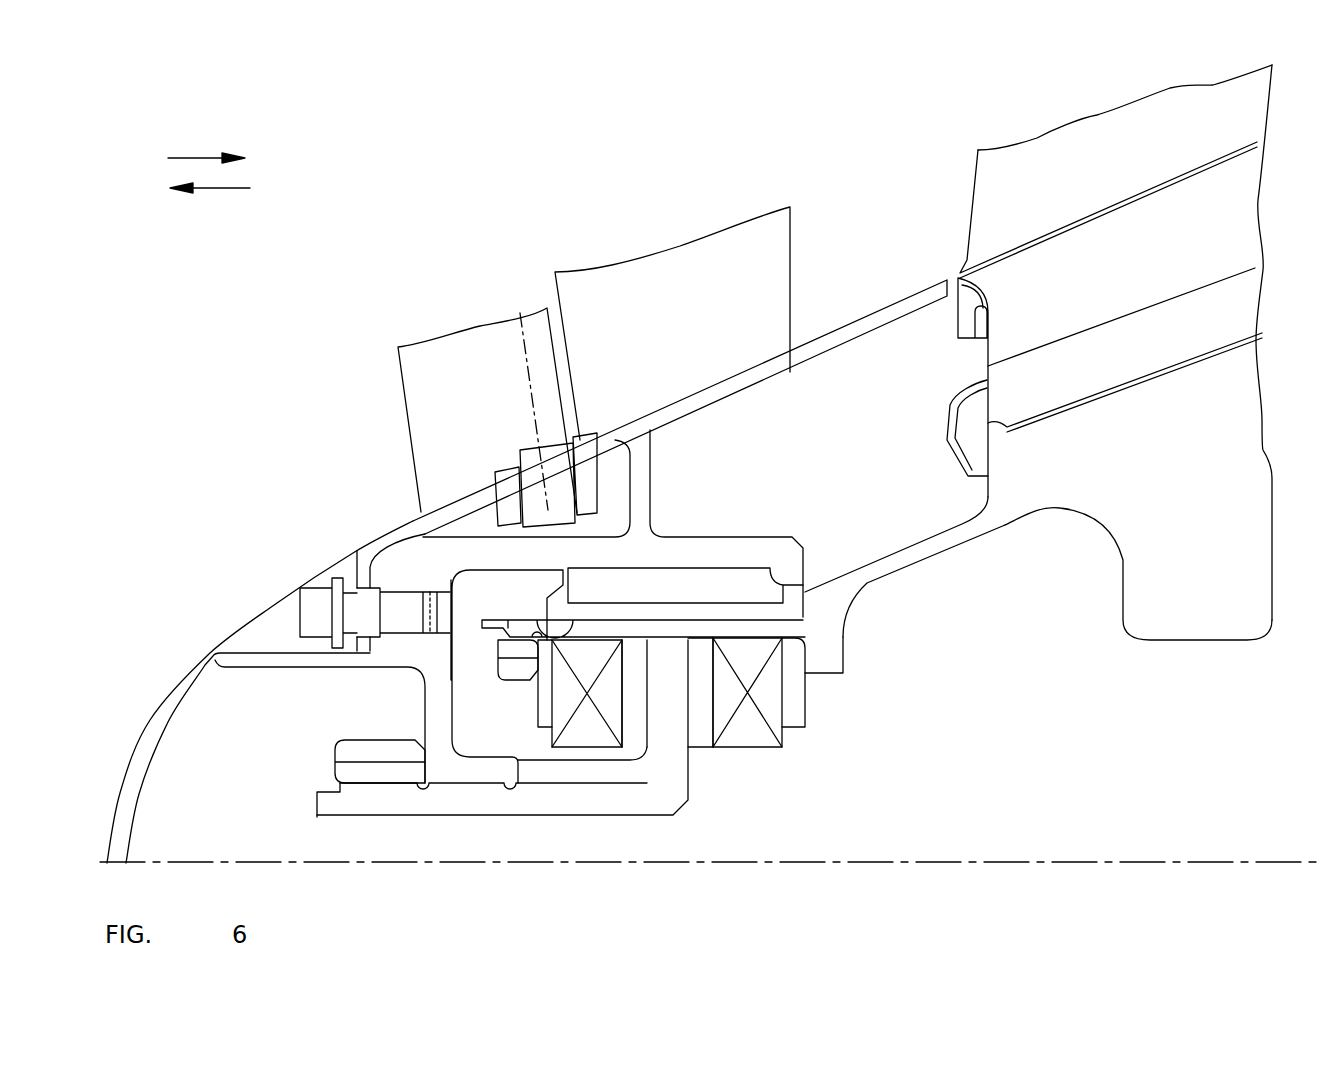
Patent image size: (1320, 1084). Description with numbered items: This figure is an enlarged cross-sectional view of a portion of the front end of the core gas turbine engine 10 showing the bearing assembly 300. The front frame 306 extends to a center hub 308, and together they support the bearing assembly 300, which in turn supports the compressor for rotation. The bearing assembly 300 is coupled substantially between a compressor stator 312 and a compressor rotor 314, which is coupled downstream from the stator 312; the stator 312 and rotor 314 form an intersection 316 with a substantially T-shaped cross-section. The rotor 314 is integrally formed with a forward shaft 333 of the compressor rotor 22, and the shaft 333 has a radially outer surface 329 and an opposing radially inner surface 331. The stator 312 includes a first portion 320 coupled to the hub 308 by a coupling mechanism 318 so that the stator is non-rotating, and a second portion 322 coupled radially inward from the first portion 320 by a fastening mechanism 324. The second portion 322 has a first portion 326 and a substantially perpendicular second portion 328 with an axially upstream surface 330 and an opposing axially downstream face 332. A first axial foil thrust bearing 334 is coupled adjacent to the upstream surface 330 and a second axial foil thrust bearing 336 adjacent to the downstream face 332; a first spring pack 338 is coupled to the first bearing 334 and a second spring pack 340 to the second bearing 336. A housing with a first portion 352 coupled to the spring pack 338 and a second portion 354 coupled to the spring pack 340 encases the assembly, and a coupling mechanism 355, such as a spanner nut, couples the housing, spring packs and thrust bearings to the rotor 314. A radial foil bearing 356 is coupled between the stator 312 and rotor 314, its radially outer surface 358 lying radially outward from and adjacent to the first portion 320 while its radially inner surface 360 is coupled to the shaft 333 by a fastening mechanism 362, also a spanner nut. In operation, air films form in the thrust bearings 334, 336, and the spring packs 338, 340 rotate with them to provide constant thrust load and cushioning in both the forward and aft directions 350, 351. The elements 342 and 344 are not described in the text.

The core gas turbine engine 10 is at (452, 196).
The compressor rotor 22 is at (1206, 484).
The bearing assembly 300 is at (805, 741).
The front frame 306 is at (493, 421).
The center hub 308 is at (158, 690).
The compressor stator 312 is at (400, 715).
The compressor rotor 314 is at (919, 524).
The intersection 316 is at (692, 629).
The coupling mechanism 318 is at (330, 588).
The first portion 320 is at (377, 660).
The second portion 322 is at (423, 797).
The fastening mechanism 324 is at (345, 752).
The first portion 326 is at (518, 797).
The second portion 328 is at (703, 737).
The radially outer surface 329 is at (532, 620).
The axially upstream surface 330 is at (650, 665).
The radially inner surface 331 is at (633, 640).
The axially downstream face 332 is at (790, 663).
The forward shaft 333 is at (943, 547).
The first axial foil thrust bearing 334 is at (673, 757).
The second axial foil thrust bearing 336 is at (733, 727).
The first spring pack 338 is at (579, 748).
The second spring pack 340 is at (762, 752).
The core 342 is at (557, 725).
The winding 344 is at (633, 737).
The forward direction 350 is at (207, 158).
The aft direction 351 is at (208, 190).
The first portion 352 is at (543, 712).
The second portion 354 is at (797, 687).
The coupling mechanism 355 is at (507, 663).
The radial foil bearing 356 is at (700, 598).
The radially outer surface 358 is at (797, 582).
The radially inner surface 360 is at (737, 562).
The fastening mechanism 362 is at (553, 598).